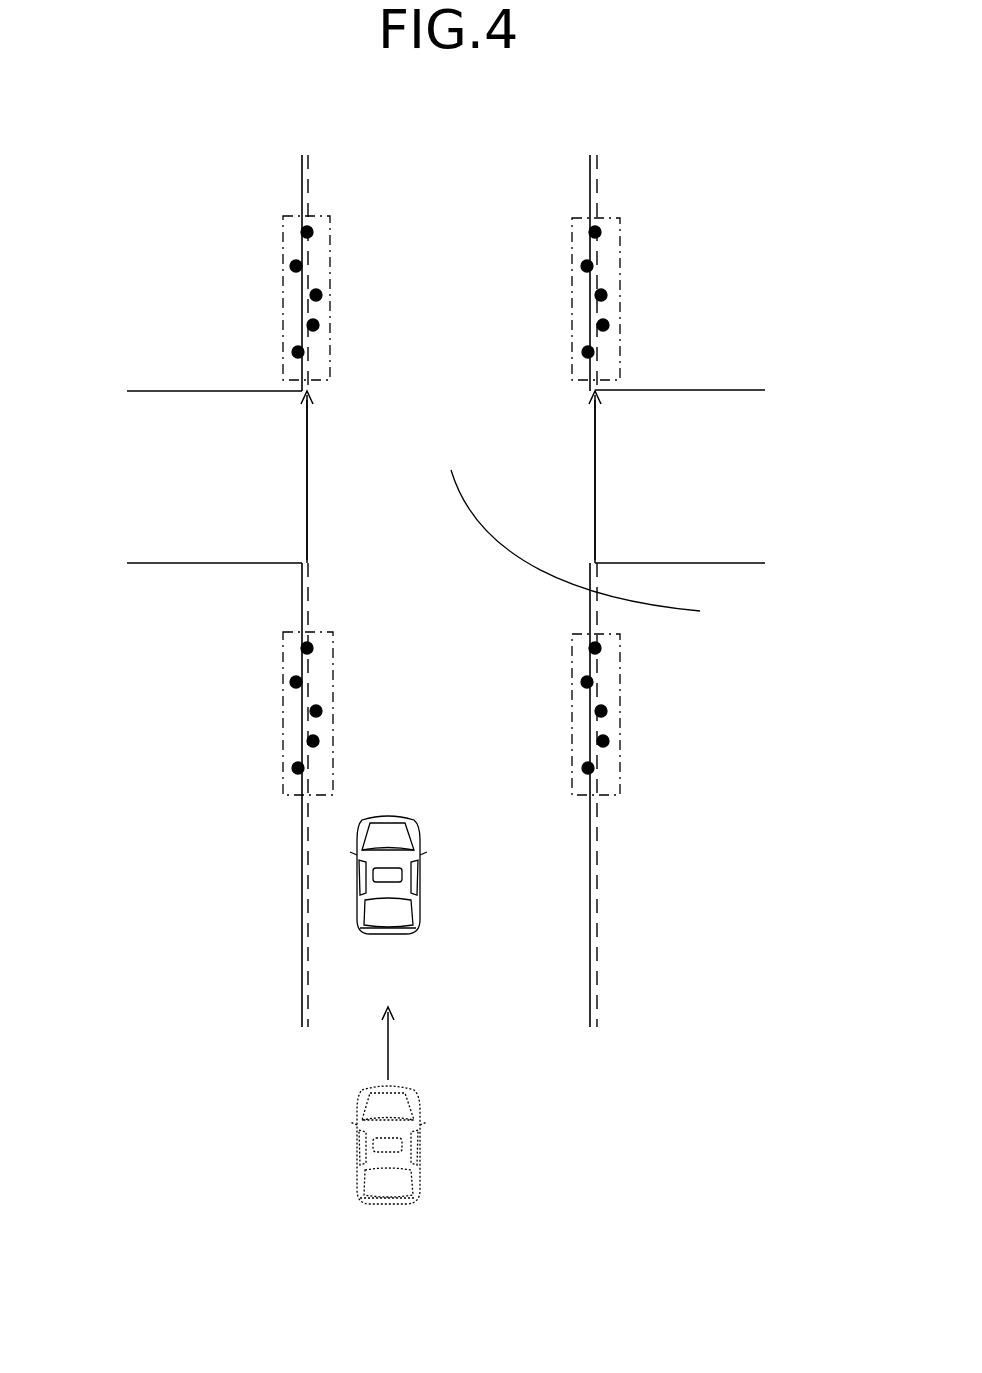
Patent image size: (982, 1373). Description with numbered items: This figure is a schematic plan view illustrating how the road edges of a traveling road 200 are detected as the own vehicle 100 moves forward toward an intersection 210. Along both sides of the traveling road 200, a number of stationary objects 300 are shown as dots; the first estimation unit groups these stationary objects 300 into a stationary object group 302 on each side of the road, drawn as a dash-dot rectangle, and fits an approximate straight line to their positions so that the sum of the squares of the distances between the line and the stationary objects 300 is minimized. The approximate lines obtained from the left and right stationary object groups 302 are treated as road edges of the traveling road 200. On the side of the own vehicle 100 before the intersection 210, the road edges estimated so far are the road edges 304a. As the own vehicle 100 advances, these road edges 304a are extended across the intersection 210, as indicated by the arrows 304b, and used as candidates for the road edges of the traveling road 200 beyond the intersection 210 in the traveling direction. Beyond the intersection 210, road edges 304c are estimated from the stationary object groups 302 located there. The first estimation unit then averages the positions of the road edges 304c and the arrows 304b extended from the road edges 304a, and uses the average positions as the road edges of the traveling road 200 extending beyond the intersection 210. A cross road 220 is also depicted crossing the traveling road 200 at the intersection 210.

The own vehicle 100 is at (420, 873).
The traveling road 200 is at (470, 172).
The intersection 210 is at (601, 551).
The cross road 220 is at (160, 497).
The stationary objects 300 is at (508, 500).
The stationary object group 302 is at (283, 240).
The road edges on the side of the own vehicle 304a is at (300, 840).
The arrows 304b is at (305, 440).
The road edges beyond the intersection 304c is at (310, 188).